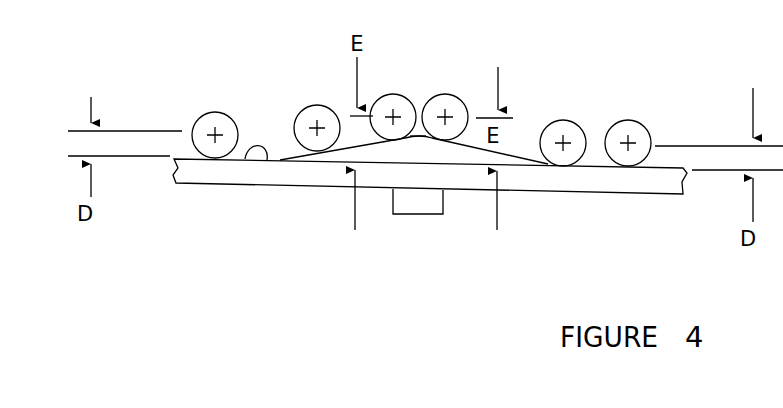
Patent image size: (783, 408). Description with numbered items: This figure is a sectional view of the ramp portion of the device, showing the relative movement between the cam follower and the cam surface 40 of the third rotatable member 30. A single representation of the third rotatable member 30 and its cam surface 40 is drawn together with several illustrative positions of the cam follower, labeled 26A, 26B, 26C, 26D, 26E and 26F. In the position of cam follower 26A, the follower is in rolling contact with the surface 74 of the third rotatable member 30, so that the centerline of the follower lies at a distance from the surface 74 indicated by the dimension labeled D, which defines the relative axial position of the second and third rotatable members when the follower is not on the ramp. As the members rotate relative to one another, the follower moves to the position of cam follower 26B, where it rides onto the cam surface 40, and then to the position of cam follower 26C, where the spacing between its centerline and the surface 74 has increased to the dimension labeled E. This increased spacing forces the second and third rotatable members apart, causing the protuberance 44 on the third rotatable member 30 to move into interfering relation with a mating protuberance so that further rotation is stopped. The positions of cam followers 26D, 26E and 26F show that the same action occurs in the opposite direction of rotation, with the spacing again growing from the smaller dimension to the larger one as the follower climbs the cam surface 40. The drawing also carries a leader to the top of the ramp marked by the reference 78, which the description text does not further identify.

The cam follower position 26A is at (207, 112).
The cam follower position 26B is at (310, 105).
The cam follower position 26C is at (395, 94).
The cam follower position 26D is at (636, 121).
The cam follower position 26E is at (569, 120).
The cam follower position 26F is at (453, 94).
The third rotatable member 30 is at (322, 177).
The cam surface 40 is at (388, 153).
The protuberance 44 is at (433, 210).
The surface 74 is at (267, 160).
The peak 78 is at (419, 139).